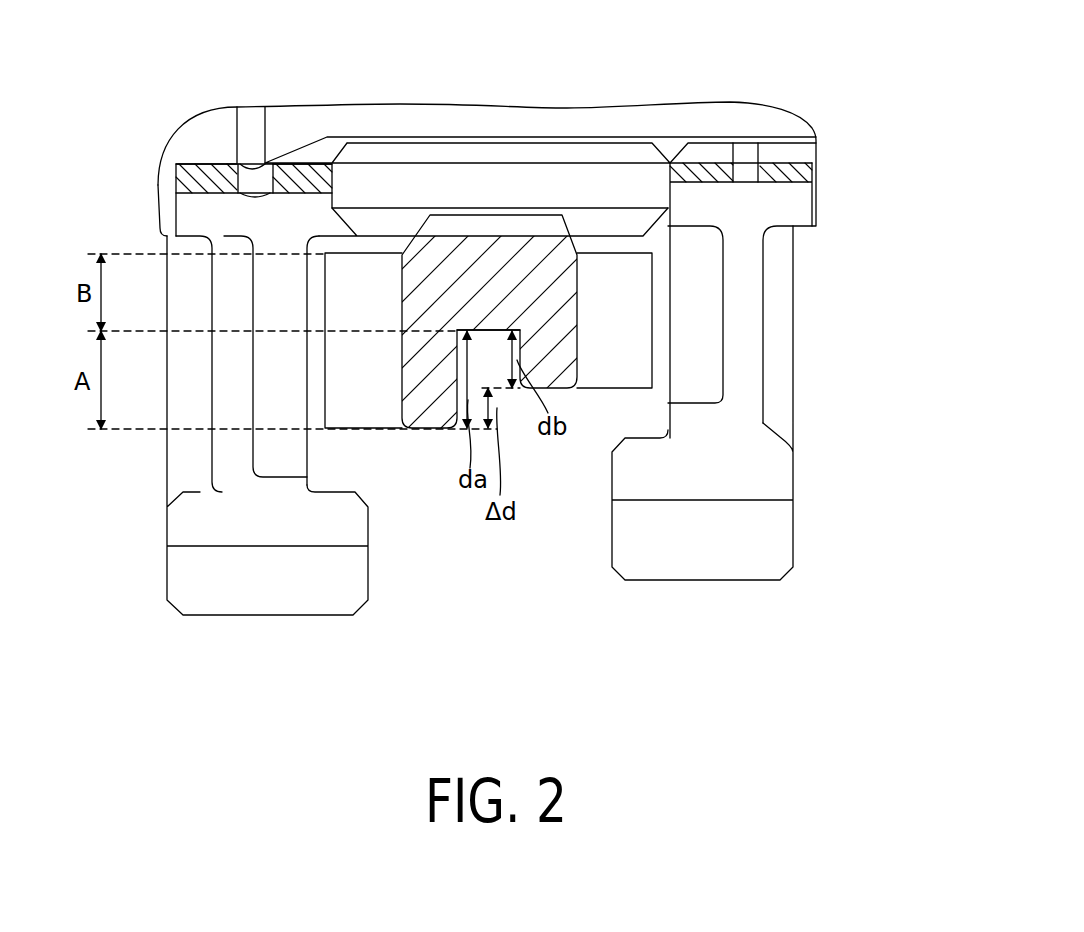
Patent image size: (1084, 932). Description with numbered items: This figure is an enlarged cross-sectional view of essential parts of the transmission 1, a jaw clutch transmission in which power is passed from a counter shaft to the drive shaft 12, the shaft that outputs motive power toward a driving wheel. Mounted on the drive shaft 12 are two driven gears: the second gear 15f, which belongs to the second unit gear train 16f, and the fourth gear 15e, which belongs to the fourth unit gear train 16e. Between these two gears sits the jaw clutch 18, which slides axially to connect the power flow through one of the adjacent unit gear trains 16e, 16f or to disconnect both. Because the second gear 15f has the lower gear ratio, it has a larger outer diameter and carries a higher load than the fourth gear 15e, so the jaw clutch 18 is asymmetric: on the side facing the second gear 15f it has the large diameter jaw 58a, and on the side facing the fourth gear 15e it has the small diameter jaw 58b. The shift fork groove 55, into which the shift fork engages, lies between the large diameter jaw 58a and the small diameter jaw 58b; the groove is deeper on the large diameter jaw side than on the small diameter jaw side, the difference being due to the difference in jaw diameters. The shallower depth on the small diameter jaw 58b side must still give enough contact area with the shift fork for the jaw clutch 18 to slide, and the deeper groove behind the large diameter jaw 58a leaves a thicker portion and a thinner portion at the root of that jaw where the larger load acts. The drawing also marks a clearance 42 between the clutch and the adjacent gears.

The transmission 1 is at (735, 68).
The drive shaft 12 is at (570, 103).
The fourth gear 15e is at (658, 583).
The second gear 15f is at (245, 618).
The fourth unit gear train 16e is at (702, 452).
The second unit gear train 16f is at (267, 474).
The jaw clutch 18 is at (427, 430).
The gap 42 is at (253, 317).
The shift fork groove 55 is at (490, 333).
The large diameter jaw 58a is at (375, 430).
The small diameter jaw 58b is at (620, 388).